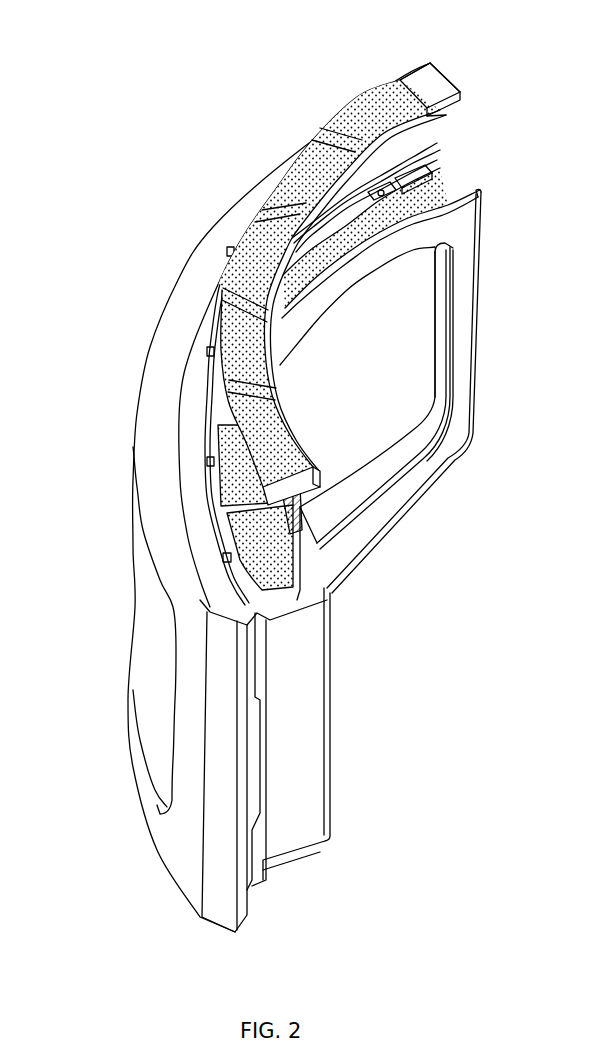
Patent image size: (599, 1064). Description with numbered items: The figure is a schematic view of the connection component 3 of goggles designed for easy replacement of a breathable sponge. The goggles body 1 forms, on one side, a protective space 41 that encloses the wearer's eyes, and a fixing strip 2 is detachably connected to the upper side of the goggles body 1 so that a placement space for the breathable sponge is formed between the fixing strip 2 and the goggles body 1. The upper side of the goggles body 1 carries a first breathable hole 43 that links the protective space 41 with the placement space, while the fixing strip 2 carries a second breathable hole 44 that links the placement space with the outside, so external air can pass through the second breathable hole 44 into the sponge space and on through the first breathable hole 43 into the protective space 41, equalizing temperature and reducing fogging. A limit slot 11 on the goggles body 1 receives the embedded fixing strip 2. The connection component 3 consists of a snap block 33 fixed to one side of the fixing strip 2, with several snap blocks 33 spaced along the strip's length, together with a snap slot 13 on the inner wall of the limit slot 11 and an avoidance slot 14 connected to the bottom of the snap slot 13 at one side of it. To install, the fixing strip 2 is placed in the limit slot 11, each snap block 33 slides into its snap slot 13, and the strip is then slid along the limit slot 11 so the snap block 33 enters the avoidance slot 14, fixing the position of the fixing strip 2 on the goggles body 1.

The goggles body 1 is at (463, 277).
The fixing strip 2 is at (440, 85).
The connection component 3 is at (87, 310).
The limit slot 11 is at (420, 180).
The snap slot 13 is at (438, 141).
The avoidance slot 14 is at (415, 161).
The snap block 33 is at (207, 350).
The protective space 41 is at (408, 346).
The first breathable hole 43 is at (398, 191).
The second breathable hole 44 is at (430, 63).